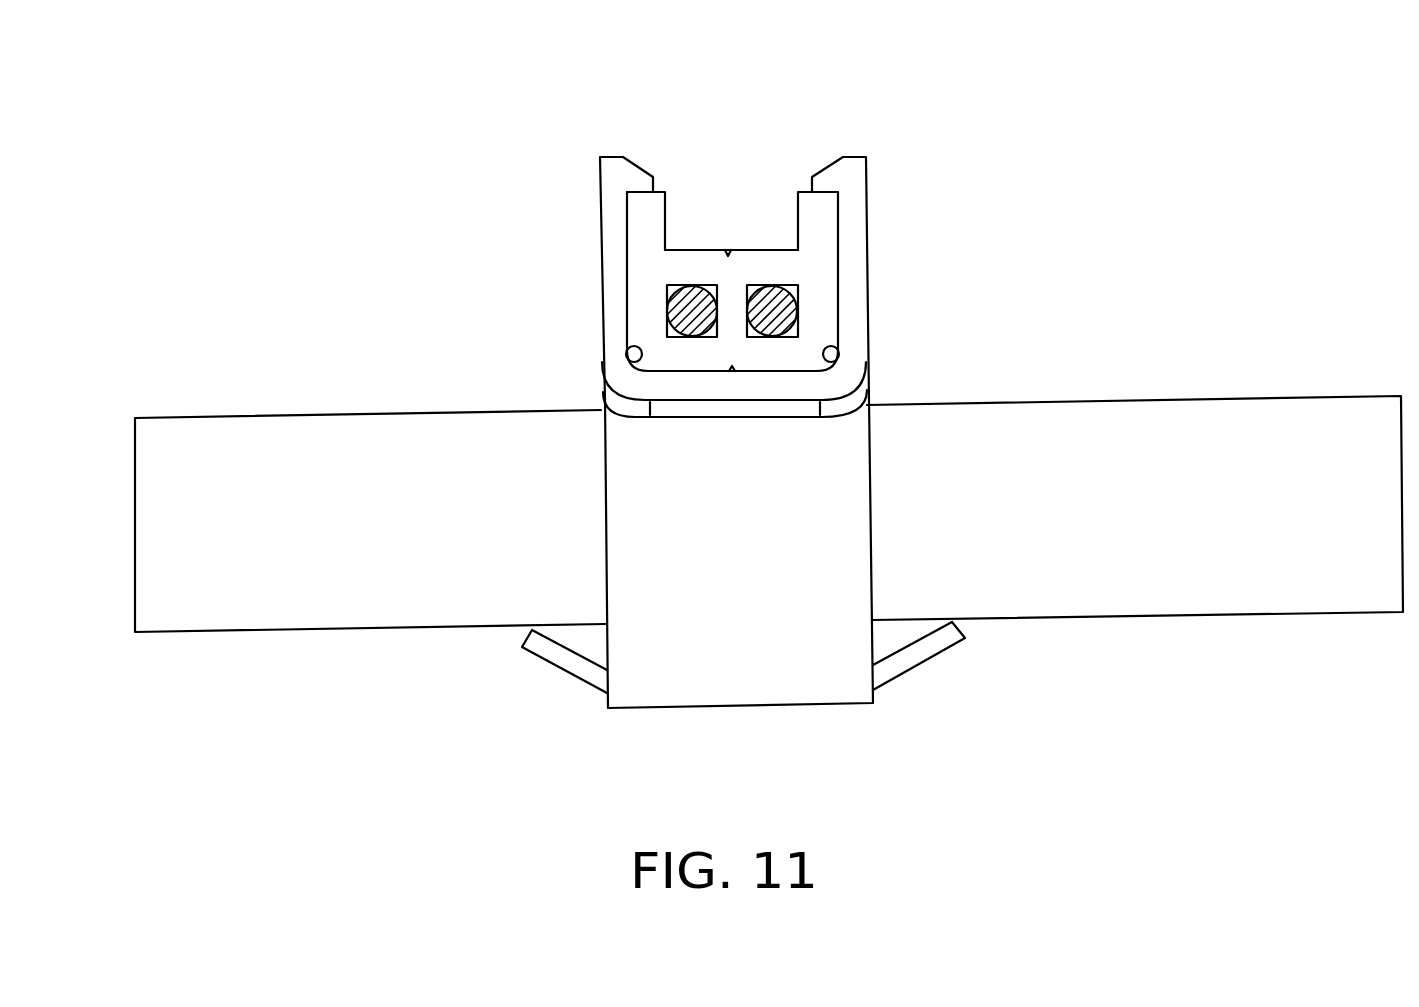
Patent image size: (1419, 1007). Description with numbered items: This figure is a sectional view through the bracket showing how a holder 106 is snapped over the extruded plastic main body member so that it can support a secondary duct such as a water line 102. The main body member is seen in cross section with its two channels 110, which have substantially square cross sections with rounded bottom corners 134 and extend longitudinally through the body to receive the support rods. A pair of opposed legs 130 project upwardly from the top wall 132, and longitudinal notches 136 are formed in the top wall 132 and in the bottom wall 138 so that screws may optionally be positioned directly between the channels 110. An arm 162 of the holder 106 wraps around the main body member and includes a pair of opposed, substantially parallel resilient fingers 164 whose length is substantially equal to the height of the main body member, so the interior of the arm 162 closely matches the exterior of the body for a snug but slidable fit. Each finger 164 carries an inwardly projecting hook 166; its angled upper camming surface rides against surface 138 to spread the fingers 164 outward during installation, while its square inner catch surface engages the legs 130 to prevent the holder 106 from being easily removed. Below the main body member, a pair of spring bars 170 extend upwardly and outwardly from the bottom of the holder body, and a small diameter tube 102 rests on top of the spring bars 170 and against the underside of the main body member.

The water line 102 is at (1153, 478).
The holder 106 is at (806, 518).
The channels 110 is at (663, 285).
The legs 130 is at (642, 217).
The top wall 132 is at (688, 250).
The bottom corners 134 is at (626, 345).
The longitudinal notches 136 is at (728, 250).
The bottom wall 138 is at (787, 371).
The arm 162 is at (858, 237).
The resilient fingers 164 is at (612, 307).
The hook 166 is at (627, 160).
The spring bars 170 is at (532, 652).